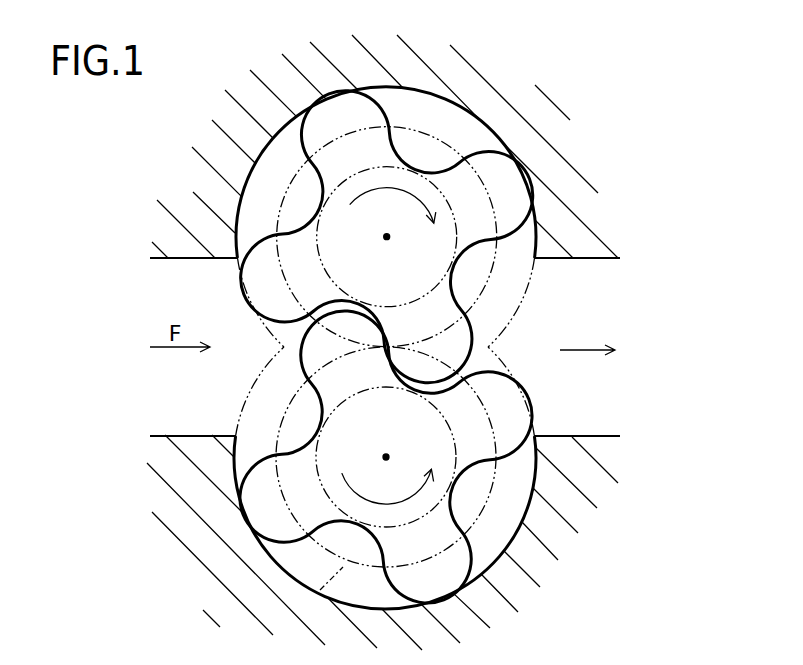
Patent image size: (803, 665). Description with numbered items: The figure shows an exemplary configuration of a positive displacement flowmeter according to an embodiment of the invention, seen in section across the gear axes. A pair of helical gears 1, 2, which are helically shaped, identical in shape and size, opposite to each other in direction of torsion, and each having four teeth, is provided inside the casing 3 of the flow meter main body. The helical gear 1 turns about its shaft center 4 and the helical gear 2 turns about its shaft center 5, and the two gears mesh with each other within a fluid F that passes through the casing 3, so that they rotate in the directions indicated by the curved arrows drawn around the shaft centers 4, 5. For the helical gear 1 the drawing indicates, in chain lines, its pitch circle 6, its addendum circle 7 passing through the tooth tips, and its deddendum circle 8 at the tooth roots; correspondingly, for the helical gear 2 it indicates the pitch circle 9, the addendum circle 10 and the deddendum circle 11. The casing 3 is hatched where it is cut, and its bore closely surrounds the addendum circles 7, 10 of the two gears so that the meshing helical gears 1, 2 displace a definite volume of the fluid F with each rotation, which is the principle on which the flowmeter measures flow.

The helical gear 1 is at (508, 403).
The helical gear 2 is at (485, 153).
The casing 3 is at (551, 116).
The shaft center 4 is at (386, 457).
The shaft center 5 is at (387, 237).
The pitch circle 6 is at (296, 171).
The addendum circle 7 is at (523, 303).
The deddendum circle 8 is at (292, 286).
The pitch circle 9 is at (320, 590).
The addendum circle 10 is at (247, 390).
The deddendum circle 11 is at (292, 505).